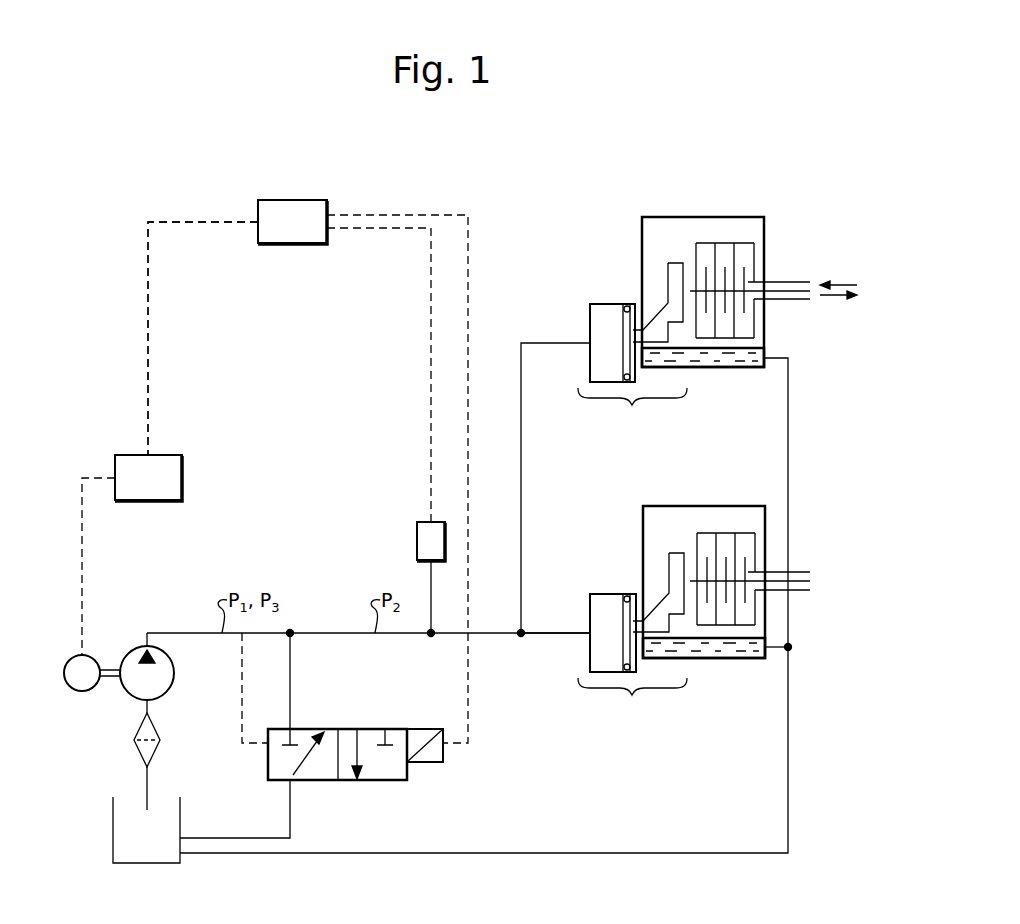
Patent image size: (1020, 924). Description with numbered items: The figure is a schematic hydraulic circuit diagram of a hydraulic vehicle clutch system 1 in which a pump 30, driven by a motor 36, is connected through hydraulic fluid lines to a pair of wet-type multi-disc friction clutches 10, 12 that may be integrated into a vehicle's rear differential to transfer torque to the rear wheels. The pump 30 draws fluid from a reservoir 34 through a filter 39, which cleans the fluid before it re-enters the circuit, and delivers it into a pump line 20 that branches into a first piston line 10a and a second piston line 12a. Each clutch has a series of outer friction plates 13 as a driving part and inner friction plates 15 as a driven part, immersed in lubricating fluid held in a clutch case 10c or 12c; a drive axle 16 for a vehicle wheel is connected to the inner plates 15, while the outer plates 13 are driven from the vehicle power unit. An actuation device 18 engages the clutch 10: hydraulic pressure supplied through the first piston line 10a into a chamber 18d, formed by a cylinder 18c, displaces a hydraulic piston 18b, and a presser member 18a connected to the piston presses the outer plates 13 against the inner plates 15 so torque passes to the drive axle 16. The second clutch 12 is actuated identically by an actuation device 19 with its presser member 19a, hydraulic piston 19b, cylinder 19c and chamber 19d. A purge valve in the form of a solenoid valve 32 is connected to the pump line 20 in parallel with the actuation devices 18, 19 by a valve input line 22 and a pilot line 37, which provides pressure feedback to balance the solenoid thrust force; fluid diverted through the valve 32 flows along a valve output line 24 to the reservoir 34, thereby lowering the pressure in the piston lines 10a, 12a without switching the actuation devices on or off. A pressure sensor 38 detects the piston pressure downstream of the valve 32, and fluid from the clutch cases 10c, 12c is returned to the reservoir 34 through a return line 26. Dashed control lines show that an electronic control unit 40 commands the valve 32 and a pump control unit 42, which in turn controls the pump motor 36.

The hydraulic vehicle clutch system 1 is at (138, 199).
The clutch 10 is at (684, 197).
The first piston line 10a is at (521, 451).
The clutch case 10c is at (728, 217).
The clutch 12 is at (684, 489).
The second piston line 12a is at (548, 633).
The clutch case 12c is at (728, 506).
The outer friction plates 13 is at (734, 252).
The inner friction plates 15 is at (746, 279).
The drive axle 16 is at (795, 299).
The actuation device 18 is at (609, 322).
The presser member 18a is at (674, 263).
The hydraulic piston 18b is at (622, 320).
The cylinder 18c is at (598, 304).
The chamber 18d is at (607, 337).
The actuation device 19 is at (609, 612).
The presser member 19a is at (674, 553).
The hydraulic piston 19b is at (622, 610).
The cylinder 19c is at (598, 594).
The chamber 19d is at (607, 627).
The pump line 20 is at (168, 633).
The valve input line 22 is at (290, 690).
The valve output line 24 is at (290, 815).
The return line 26 is at (646, 853).
The pump 30 is at (174, 673).
The solenoid valve 32 is at (393, 781).
The reservoir 34 is at (113, 828).
The motor 36 is at (82, 691).
The pilot line 37 is at (242, 708).
The pressure sensor 38 is at (417, 541).
The filter 39 is at (160, 741).
The electronic control unit 40 is at (313, 200).
The pump control unit 42 is at (182, 477).